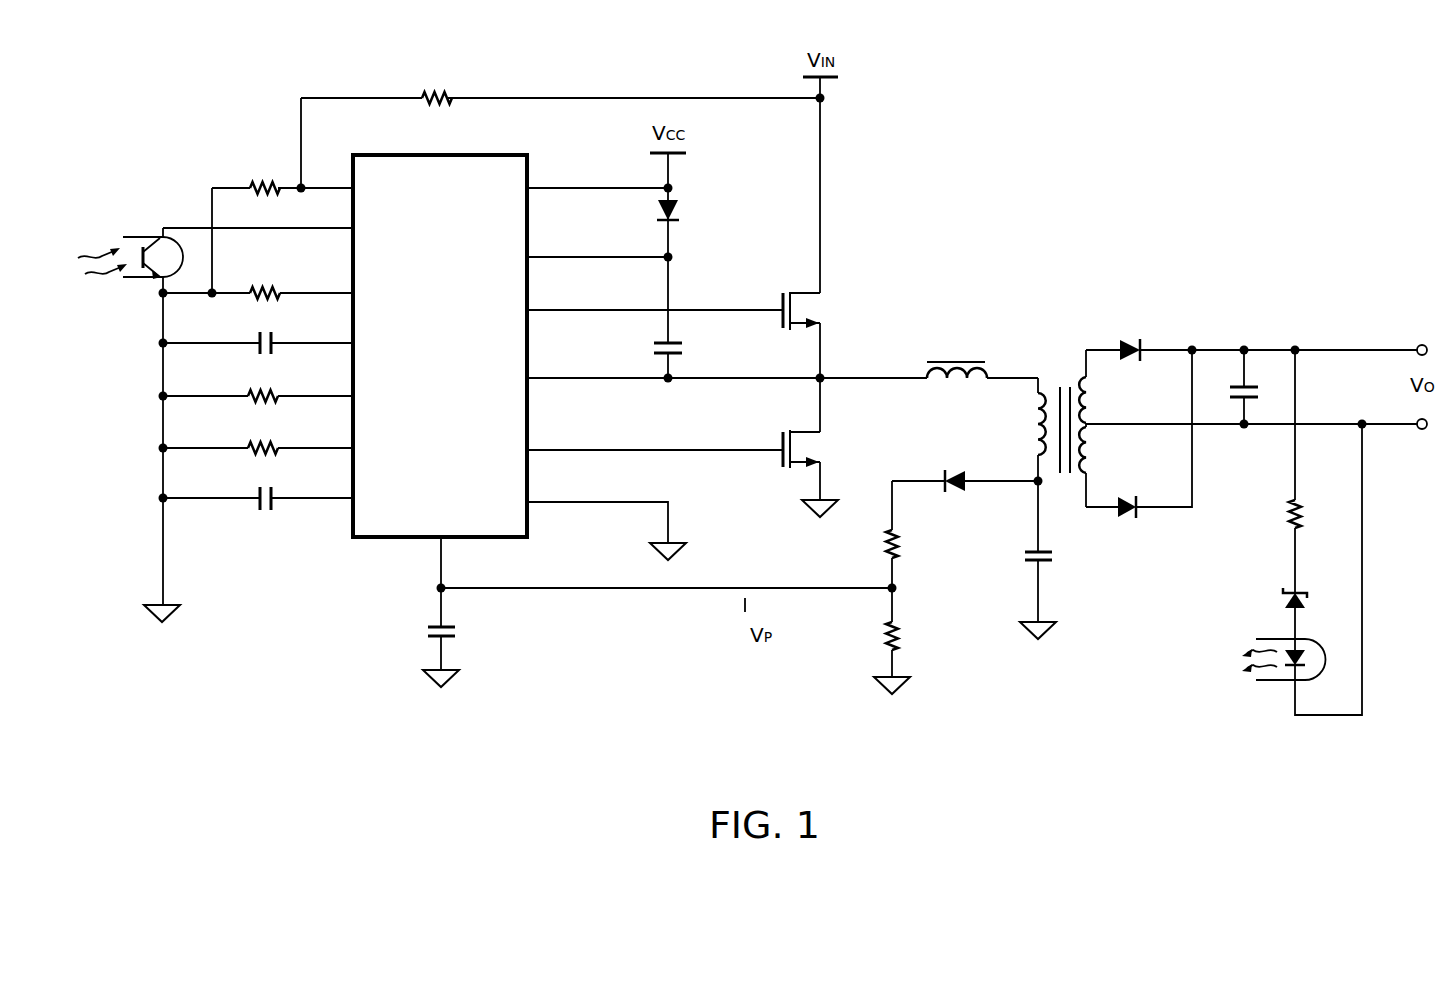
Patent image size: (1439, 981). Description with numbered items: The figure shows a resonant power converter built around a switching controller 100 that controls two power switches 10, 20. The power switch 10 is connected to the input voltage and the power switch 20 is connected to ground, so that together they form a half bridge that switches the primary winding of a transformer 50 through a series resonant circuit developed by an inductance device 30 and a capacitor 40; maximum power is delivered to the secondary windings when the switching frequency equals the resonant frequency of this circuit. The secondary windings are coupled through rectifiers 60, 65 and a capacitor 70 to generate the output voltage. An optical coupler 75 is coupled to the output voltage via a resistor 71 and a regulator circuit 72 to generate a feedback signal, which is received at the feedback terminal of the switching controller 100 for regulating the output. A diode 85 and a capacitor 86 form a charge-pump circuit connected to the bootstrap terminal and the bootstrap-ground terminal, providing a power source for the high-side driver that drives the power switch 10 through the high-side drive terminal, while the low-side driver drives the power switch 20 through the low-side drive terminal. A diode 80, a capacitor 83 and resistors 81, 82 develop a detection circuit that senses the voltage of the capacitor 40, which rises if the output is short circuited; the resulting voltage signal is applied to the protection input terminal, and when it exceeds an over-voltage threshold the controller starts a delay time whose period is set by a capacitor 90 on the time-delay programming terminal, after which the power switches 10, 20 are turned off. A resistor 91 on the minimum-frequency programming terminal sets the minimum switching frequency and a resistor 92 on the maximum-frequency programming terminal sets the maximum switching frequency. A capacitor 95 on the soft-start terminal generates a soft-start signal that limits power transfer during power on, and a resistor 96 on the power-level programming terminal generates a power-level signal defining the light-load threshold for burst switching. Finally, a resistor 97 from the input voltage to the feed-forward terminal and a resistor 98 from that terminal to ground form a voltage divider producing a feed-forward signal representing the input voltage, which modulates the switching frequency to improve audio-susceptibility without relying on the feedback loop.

The power switch 10 is at (786, 288).
The power switch 20 is at (792, 472).
The inductance device 30 is at (960, 360).
The capacitor 40 is at (1052, 570).
The transformer 50 is at (1058, 375).
The rectifier 60 is at (1134, 338).
The rectifier 65 is at (1134, 528).
The capacitor 70 is at (1252, 380).
The resistor 71 is at (1326, 494).
The regulator circuit 72 is at (1305, 590).
The optical coupler 75 is at (133, 230).
The diode 80 is at (955, 470).
The resistor 81 is at (908, 545).
The resistor 82 is at (908, 638).
The capacitor 83 is at (458, 625).
The diode 85 is at (684, 212).
The capacitor 86 is at (688, 346).
The capacitor 90 is at (278, 496).
The resistor 91 is at (280, 446).
The resistor 92 is at (280, 394).
The capacitor 95 is at (278, 342).
The resistor 96 is at (280, 280).
The resistor 97 is at (432, 90).
The resistor 98 is at (248, 178).
The switching controller 100 is at (385, 540).